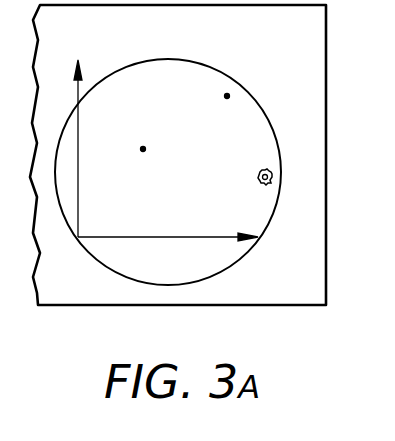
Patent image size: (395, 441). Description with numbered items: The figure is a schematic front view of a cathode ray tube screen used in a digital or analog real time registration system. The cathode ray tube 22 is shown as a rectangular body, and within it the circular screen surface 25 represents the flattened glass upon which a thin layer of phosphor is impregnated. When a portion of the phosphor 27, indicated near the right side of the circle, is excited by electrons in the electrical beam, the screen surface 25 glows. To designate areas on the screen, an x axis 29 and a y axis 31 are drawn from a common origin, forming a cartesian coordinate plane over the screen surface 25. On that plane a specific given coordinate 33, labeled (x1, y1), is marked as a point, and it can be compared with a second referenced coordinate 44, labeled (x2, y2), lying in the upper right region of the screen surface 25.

The cathode ray tube 22 is at (337, 334).
The screen surface 25 is at (273, 128).
The phosphor 27 is at (273, 177).
The x axis 29 is at (183, 238).
The y axis 31 is at (80, 206).
The coordinate 33 is at (146, 147).
The second referenced coordinate 44 is at (229, 95).